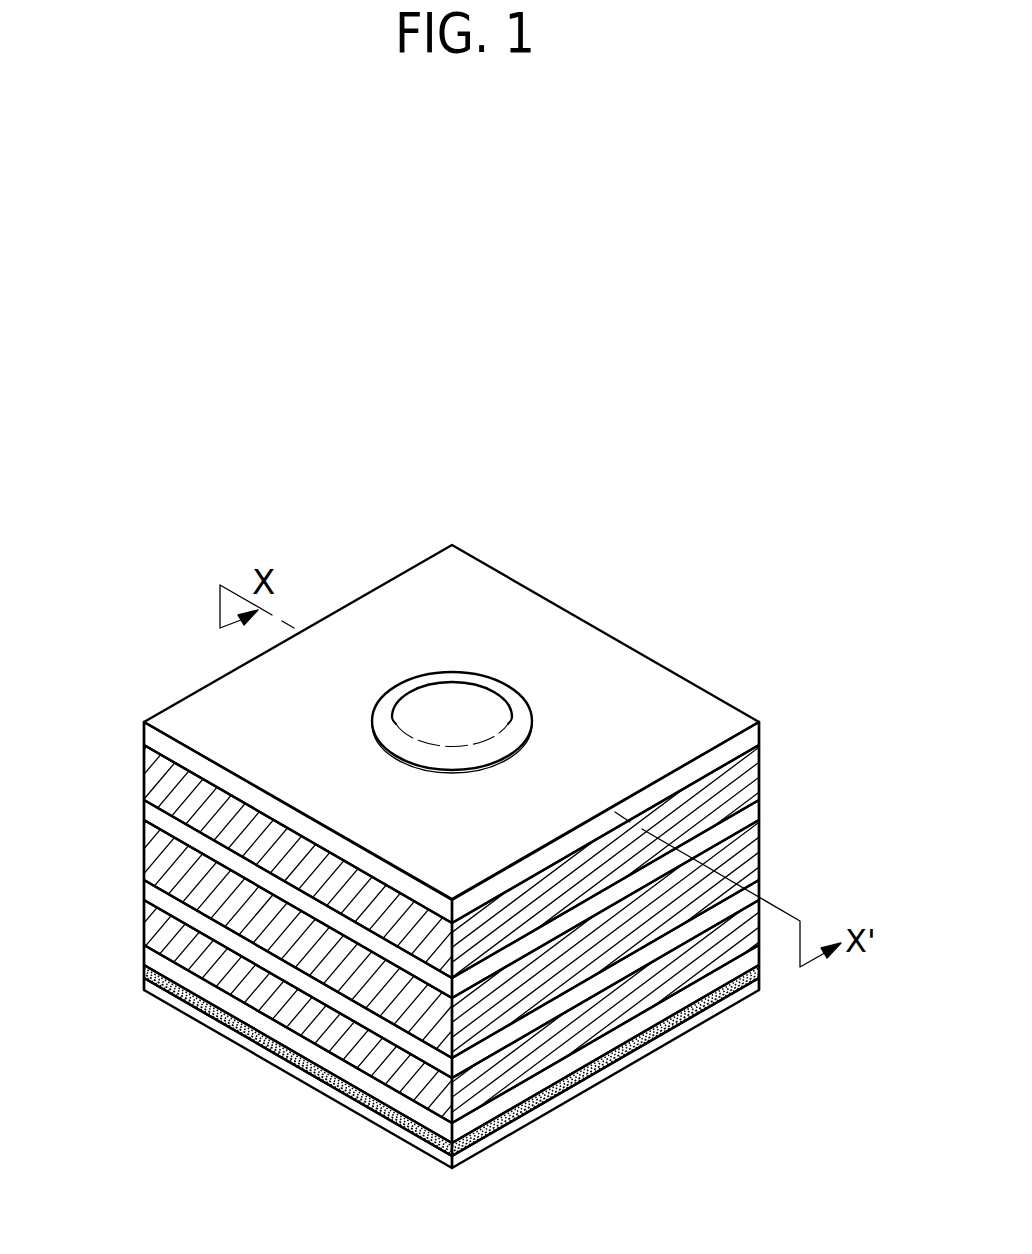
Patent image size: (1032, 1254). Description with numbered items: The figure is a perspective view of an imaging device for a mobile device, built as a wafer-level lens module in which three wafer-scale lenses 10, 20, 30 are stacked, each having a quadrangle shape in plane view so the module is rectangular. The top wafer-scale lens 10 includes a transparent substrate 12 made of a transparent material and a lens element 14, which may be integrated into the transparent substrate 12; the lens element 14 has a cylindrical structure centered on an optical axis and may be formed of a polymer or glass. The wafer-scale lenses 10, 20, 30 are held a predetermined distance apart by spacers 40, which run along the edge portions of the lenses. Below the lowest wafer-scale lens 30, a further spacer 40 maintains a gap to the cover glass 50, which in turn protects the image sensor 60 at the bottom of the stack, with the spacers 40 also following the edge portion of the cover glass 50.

The wafer-scale lens 10 is at (855, 636).
The transparent substrate 12 is at (747, 737).
The lens element 14 is at (473, 707).
The wafer-scale lens 20 is at (759, 802).
The wafer-scale lens 30 is at (668, 951).
The spacer 40 is at (157, 930).
The cover glass 50 is at (632, 1039).
The image sensor 60 is at (580, 1093).